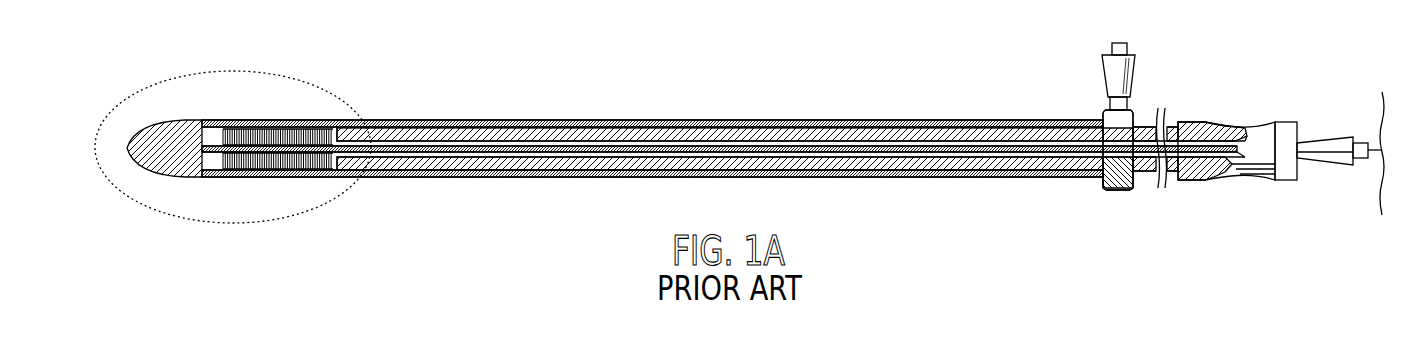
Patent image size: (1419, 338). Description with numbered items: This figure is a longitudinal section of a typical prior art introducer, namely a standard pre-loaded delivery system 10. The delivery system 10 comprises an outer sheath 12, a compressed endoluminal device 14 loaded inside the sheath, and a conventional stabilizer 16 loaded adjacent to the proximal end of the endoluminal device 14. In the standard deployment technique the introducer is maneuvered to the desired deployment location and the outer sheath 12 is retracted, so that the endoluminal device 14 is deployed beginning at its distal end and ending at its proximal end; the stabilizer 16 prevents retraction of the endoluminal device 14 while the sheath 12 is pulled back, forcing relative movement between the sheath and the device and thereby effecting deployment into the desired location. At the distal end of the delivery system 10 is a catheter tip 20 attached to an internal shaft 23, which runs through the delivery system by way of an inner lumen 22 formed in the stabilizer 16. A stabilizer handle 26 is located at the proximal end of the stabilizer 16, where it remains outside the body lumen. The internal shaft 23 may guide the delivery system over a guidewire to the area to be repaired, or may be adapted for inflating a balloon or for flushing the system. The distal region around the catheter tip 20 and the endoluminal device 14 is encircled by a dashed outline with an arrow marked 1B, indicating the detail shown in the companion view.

The pre-loaded delivery system 10 is at (885, 85).
The outer sheath 12 is at (677, 121).
The compressed endoluminal device 14 is at (246, 128).
The stabilizer 16 is at (997, 168).
The catheter tip 20 is at (177, 178).
The inner lumen 22 is at (463, 140).
The internal shaft 23 is at (584, 150).
The stabilizer handle 26 is at (1192, 121).
The detail region shown in FIG. 1B is at (328, 207).